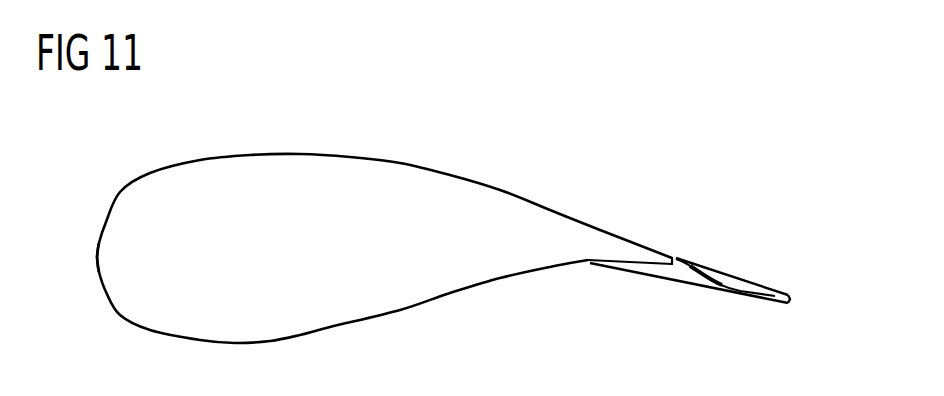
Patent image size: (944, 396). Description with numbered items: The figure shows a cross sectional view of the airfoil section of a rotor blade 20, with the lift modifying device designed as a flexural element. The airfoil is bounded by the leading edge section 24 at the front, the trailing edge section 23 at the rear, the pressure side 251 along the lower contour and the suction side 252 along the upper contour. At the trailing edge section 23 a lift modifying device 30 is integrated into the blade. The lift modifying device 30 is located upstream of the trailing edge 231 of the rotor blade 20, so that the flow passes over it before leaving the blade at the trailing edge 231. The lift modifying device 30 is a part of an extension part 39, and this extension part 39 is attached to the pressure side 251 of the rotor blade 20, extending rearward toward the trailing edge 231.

The rotor blade 20 is at (427, 122).
The leading edge section 24 is at (97, 254).
The suction side 252 is at (311, 153).
The pressure side 251 is at (328, 328).
The trailing edge section 23 is at (665, 215).
The lift modifying device 30 is at (728, 283).
The extension part 39 is at (680, 272).
The trailing edge 231 is at (791, 300).